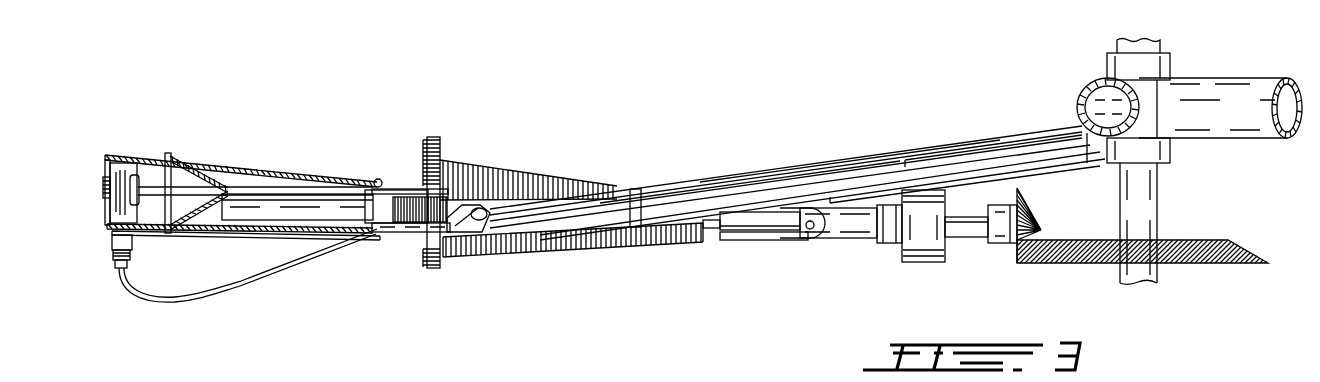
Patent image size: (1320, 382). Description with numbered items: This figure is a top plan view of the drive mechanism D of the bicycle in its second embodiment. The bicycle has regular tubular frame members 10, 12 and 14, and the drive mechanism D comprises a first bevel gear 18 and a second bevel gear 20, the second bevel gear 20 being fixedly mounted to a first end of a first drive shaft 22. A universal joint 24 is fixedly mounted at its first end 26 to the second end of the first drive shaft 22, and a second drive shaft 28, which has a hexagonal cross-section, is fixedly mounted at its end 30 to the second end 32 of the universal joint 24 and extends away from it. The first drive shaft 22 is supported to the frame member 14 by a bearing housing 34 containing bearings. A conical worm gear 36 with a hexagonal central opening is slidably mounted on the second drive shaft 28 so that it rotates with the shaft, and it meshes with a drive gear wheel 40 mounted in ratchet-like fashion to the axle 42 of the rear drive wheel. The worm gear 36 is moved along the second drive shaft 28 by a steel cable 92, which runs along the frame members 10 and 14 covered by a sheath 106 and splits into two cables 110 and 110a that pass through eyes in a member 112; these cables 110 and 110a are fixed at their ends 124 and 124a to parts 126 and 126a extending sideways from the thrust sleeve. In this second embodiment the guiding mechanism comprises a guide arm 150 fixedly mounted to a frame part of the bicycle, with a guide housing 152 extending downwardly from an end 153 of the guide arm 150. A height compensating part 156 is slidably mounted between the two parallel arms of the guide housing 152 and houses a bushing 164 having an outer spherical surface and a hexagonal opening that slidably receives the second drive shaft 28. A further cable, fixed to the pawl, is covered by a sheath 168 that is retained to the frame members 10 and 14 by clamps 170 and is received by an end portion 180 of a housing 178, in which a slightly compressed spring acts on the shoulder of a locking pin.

The tubular frame member 10 is at (1250, 130).
The tubular frame member 12 is at (1079, 94).
The tubular frame member 14 is at (927, 150).
The first bevel gear 18 is at (1233, 252).
The second bevel gear 20 is at (1042, 227).
The first drive shaft 22 is at (980, 239).
The universal joint 24 is at (803, 251).
The first end of universal joint 26 is at (865, 241).
The second drive shaft 28 is at (347, 212).
The end of second drive shaft 30 is at (712, 232).
The second end of universal joint 32 is at (738, 242).
The bearing housing 34 is at (925, 264).
The conical worm gear 36 is at (618, 244).
The drive gear wheel 40 is at (470, 200).
The axle 42 is at (437, 150).
The steel cable 92 is at (413, 189).
The sheath 106 is at (746, 177).
The cable 110 is at (224, 170).
The cable 110a is at (215, 227).
The member 112 is at (168, 152).
The end of cable 124 is at (372, 187).
The end of cable 124a is at (378, 233).
The part of thrust sleeve 126 is at (375, 179).
The part of thrust sleeve 126a is at (396, 234).
The guide arm 150 is at (309, 245).
The guide housing 152 is at (120, 152).
The end of guide arm 153 is at (113, 238).
The height compensating part 156 is at (107, 204).
The bushing 164 is at (105, 186).
The sheath 168 is at (168, 306).
The clamp 170 is at (638, 190).
The housing 178 is at (116, 253).
The end portion of housing 180 is at (118, 266).
The drive mechanism D is at (582, 134).